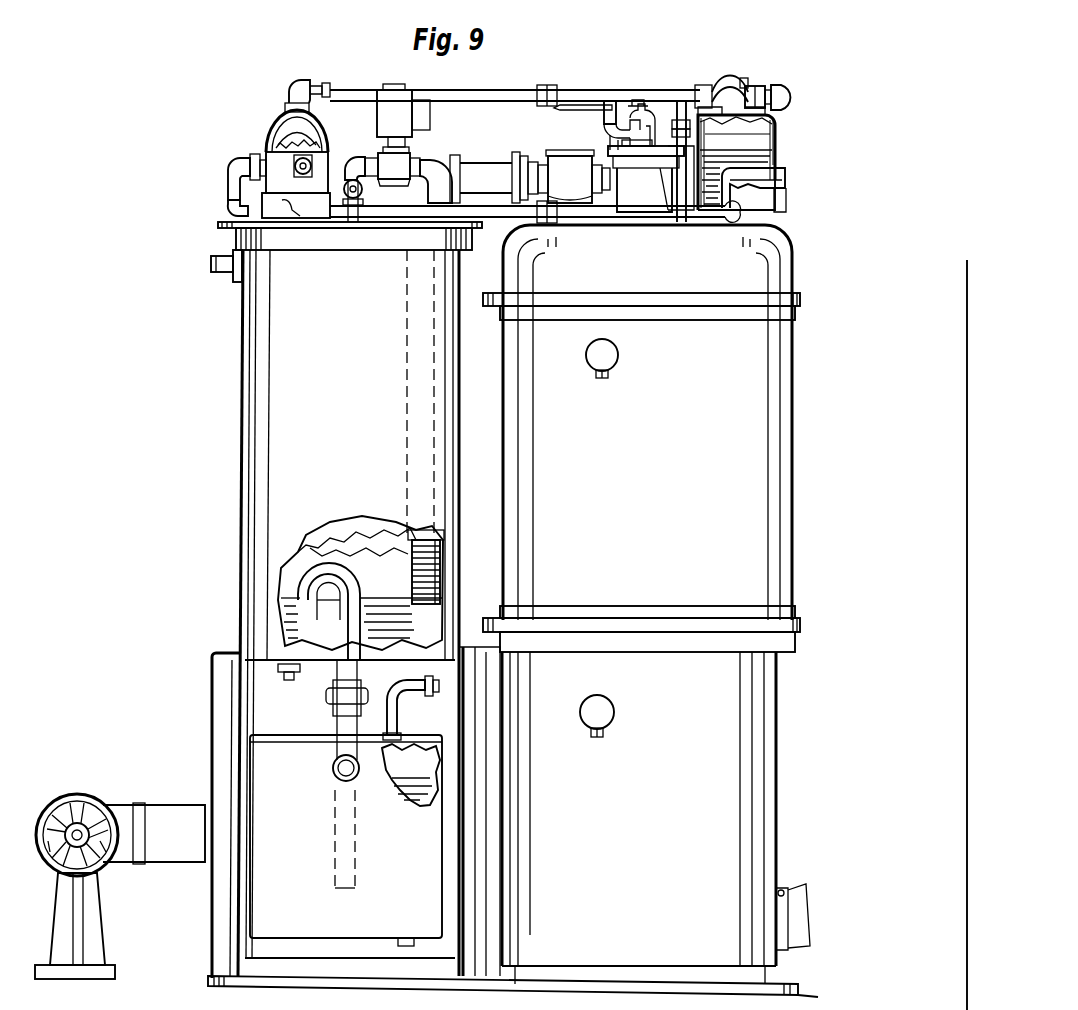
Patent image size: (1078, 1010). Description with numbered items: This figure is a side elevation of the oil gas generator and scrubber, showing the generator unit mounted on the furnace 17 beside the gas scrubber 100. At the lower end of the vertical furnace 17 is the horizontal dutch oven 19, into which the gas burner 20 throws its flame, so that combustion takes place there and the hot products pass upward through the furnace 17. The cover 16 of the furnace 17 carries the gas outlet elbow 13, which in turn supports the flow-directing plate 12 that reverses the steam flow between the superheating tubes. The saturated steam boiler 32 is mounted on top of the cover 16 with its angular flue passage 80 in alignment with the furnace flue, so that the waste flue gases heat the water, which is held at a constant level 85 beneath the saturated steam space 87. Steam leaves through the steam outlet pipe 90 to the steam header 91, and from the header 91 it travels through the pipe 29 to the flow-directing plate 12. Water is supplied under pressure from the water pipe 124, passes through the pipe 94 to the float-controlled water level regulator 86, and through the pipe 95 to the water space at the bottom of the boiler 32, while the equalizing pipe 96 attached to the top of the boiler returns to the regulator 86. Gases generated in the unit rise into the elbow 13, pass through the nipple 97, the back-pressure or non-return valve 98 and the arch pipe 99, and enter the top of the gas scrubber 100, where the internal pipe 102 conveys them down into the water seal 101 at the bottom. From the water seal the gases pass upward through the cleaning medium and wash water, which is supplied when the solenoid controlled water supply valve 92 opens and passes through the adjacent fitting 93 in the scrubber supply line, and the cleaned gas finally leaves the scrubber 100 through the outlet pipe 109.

The flow-directing plate 12 is at (681, 140).
The gas outlet elbow 13 is at (640, 192).
The cover 16 is at (735, 264).
The furnace 17 is at (695, 830).
The dutch oven 19 is at (290, 912).
The gas burner 20 is at (92, 805).
The pipe 29 is at (690, 88).
The saturated steam boiler 32 is at (760, 126).
The angular flue passage 80 is at (762, 186).
The water level 85 is at (272, 138).
The float-controlled water level regulator 86 is at (282, 118).
The saturated steam space 87 is at (726, 140).
The steam outlet pipe 90 is at (749, 86).
The steam header 91 is at (783, 86).
The solenoid controlled water supply valve 92 is at (394, 108).
The valve 93 is at (418, 163).
The pipe 94 is at (224, 186).
The pipe 95 is at (498, 216).
The equalizing pipe 96 is at (601, 92).
The nipple 97 is at (607, 212).
The back-pressure or non-return valve 98 is at (568, 156).
The arch pipe 99 is at (462, 172).
The gas scrubber 100 is at (238, 471).
The water seal 101 is at (280, 620).
The internal pipe 102 is at (440, 583).
The outlet pipe 109 is at (212, 265).
The water pipe 124 is at (312, 166).